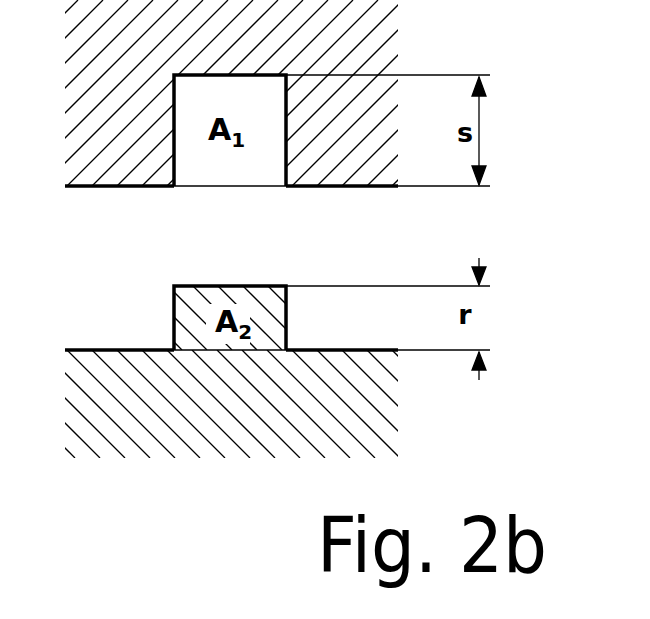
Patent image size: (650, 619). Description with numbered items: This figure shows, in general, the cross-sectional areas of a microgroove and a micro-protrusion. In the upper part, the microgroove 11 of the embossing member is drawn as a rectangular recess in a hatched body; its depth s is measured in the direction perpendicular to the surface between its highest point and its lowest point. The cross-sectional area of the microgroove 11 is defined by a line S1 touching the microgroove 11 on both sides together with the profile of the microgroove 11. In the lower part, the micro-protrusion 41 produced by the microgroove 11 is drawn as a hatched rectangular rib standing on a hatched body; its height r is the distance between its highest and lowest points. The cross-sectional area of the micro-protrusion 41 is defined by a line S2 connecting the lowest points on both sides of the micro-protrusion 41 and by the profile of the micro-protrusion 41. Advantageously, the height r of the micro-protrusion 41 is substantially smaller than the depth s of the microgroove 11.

The microgroove 11 is at (235, 172).
The micro-protrusion 41 is at (270, 283).
The line touching the microgroove on both sides S1 is at (275, 188).
The line connecting the lowest points on both sides of the micro-protrusion S2 is at (217, 350).